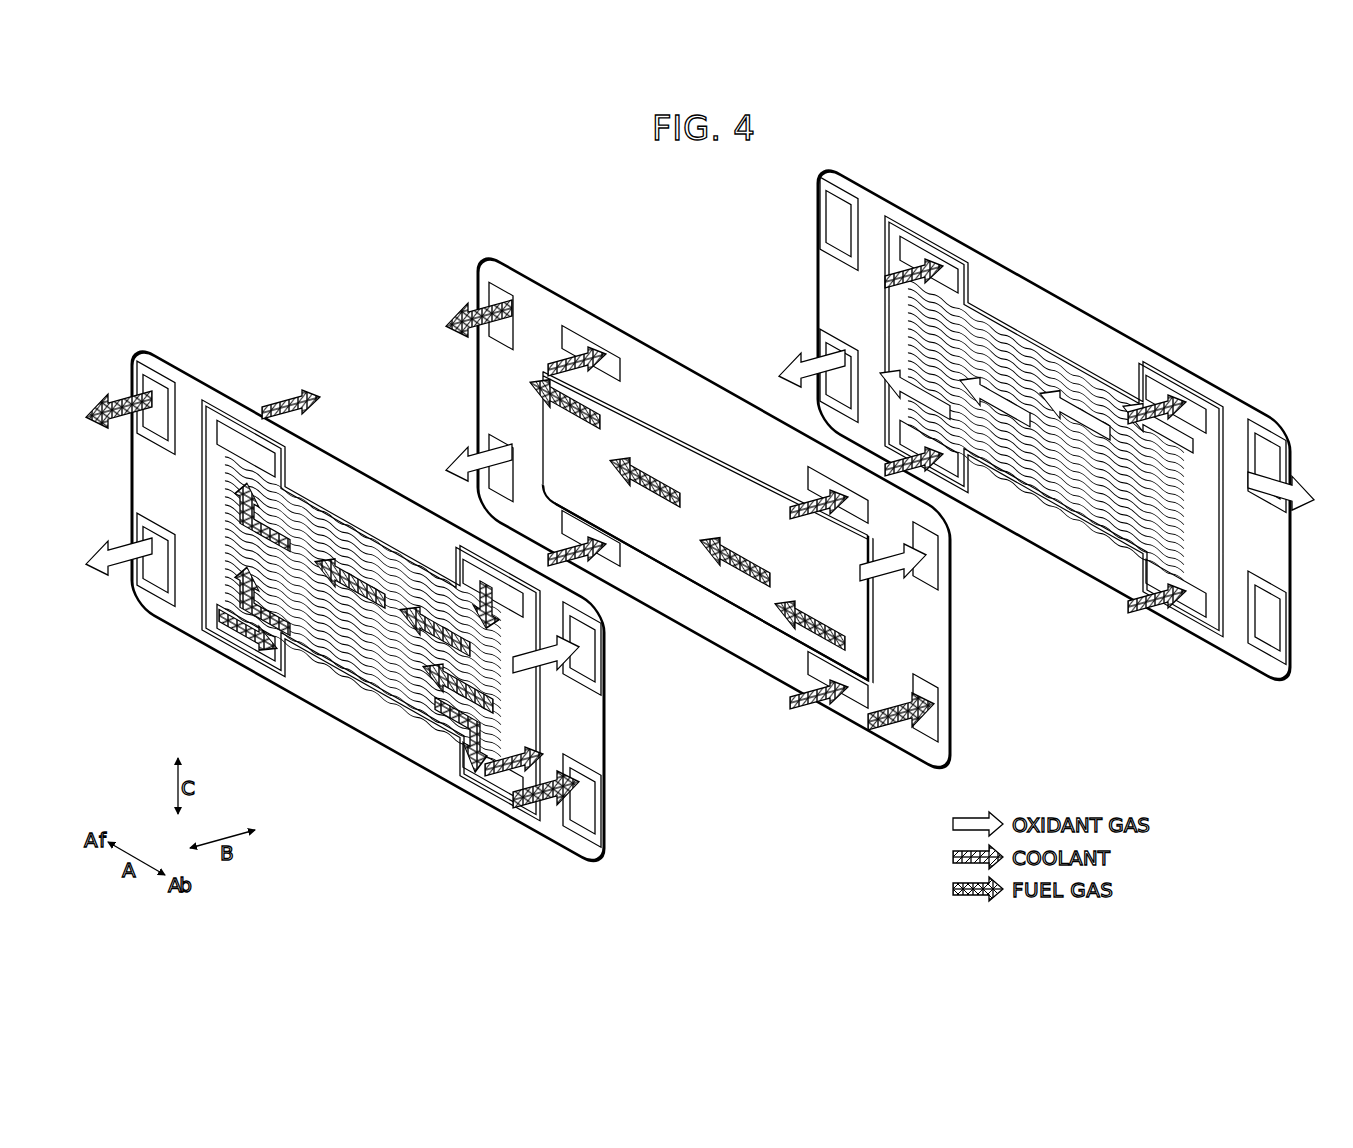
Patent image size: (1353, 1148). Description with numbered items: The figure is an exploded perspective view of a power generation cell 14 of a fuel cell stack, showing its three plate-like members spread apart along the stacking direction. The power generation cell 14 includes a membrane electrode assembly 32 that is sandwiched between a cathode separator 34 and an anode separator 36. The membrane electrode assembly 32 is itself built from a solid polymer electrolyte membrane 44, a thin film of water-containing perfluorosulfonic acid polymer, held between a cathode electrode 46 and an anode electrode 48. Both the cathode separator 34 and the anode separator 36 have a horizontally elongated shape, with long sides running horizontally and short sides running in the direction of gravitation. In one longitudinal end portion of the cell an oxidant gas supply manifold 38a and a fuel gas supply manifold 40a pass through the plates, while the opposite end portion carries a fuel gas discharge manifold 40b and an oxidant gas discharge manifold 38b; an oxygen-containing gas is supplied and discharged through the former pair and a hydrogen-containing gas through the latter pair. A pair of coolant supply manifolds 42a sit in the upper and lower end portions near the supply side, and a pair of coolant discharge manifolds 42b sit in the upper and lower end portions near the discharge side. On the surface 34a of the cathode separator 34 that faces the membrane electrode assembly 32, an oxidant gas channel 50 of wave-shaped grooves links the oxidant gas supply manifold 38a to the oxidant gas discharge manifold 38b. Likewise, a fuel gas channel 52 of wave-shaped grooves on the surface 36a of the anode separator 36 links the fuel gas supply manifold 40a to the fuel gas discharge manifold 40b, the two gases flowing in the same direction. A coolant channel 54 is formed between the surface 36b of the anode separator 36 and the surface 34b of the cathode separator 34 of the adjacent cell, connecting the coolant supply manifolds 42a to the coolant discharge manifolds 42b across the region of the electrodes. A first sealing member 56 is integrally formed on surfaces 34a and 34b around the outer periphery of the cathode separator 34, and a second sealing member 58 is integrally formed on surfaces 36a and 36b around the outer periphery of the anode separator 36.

The power generation cell 14 is at (288, 277).
The membrane electrode assembly 32 is at (497, 256).
The cathode separator 34 is at (877, 190).
The surface of the cathode separator 34a is at (1092, 557).
The surface of the cathode separator 34b is at (1106, 547).
The anode separator 36 is at (152, 347).
The surface of the anode separator 36a is at (405, 738).
The surface of the anode separator 36b is at (400, 758).
The oxidant gas supply manifold 38a is at (580, 650).
The oxidant gas discharge manifold 38b is at (160, 580).
The fuel gas supply manifold 40a is at (590, 800).
The fuel gas discharge manifold 40b is at (157, 402).
The coolant supply manifolds 42a is at (470, 770).
The coolant discharge manifolds 42b is at (243, 430).
The solid polymer electrolyte membrane 44 is at (918, 750).
The cathode electrode 46 is at (682, 550).
The anode electrode 48 is at (758, 597).
The oxidant gas channel 50 is at (1028, 445).
The fuel gas channel 52 is at (365, 690).
The coolant channel 54 is at (345, 655).
The first sealing member 56 is at (1103, 373).
The second sealing member 58 is at (236, 400).